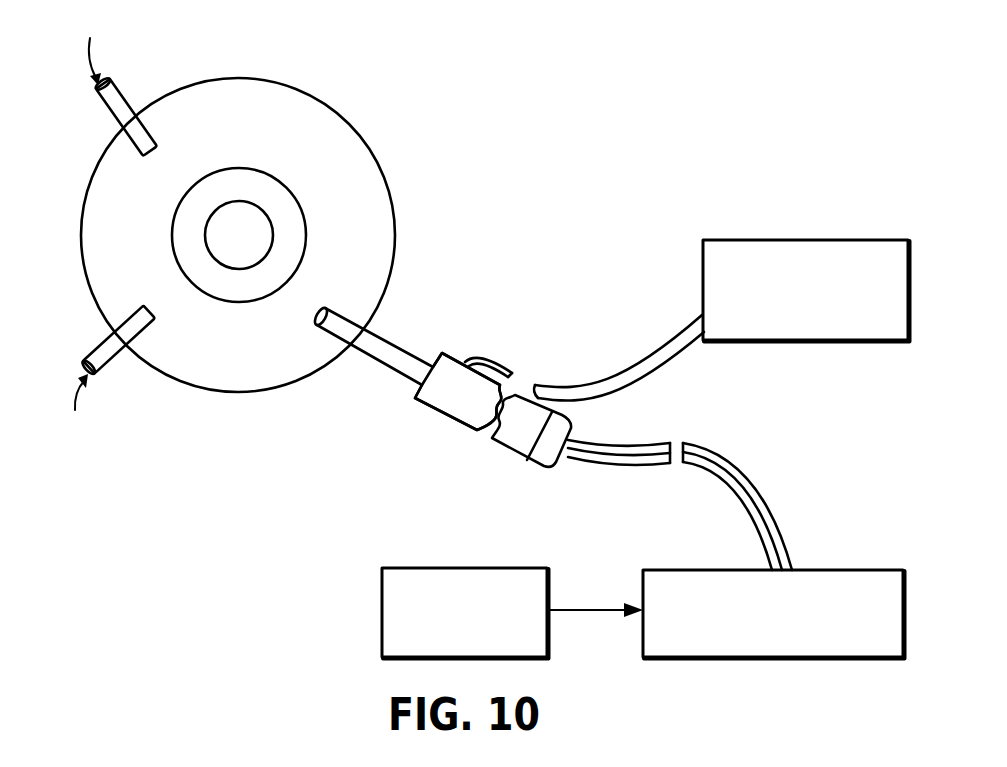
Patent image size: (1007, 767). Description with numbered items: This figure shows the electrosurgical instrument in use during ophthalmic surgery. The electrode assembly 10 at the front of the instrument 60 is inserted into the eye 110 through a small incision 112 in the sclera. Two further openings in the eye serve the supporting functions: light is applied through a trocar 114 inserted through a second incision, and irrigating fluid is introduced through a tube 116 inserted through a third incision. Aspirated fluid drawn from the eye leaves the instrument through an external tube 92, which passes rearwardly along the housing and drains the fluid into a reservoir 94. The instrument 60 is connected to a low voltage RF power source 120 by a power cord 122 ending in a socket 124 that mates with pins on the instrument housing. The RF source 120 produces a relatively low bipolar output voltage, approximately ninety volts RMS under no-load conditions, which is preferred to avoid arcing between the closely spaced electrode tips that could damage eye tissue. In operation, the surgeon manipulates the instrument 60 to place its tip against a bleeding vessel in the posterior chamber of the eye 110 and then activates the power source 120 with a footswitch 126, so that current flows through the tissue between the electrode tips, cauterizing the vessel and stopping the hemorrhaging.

The electrode assembly 10 is at (411, 374).
The instrument 60 is at (426, 430).
The external tube 92 is at (618, 383).
The reservoir 94 is at (760, 238).
The eye 110 is at (368, 150).
The incision 112 is at (323, 310).
The trocar 114 is at (107, 337).
The tube 116 is at (113, 117).
The low voltage RF power source 120 is at (838, 570).
The power cord 122 is at (707, 443).
The socket 124 is at (538, 468).
The footswitch 126 is at (382, 602).